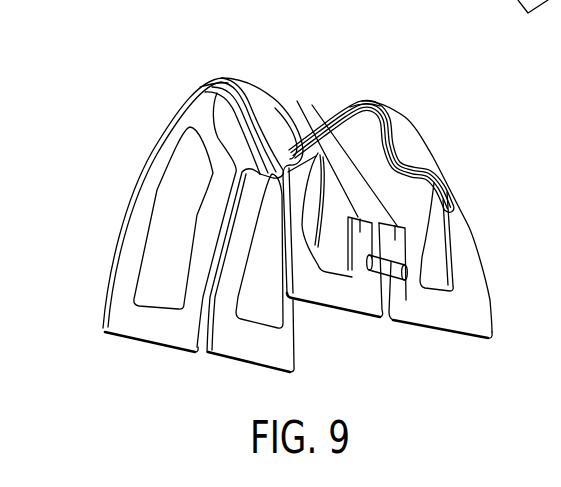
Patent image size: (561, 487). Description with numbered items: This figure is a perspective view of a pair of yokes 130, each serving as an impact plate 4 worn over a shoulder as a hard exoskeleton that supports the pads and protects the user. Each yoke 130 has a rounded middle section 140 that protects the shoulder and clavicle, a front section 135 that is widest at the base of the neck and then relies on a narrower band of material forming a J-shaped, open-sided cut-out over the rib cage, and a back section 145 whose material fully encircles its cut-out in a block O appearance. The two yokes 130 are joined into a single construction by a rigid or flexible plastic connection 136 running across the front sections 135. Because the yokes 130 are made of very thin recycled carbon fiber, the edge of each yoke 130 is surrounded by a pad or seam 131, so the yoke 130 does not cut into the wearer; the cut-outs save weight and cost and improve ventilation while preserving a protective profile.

The impact plate 4 is at (98, 92).
The yoke 130 is at (193, 108).
The pad or seam 131 is at (319, 150).
The front section 135 is at (350, 297).
The plastic connection 136 is at (383, 270).
The middle section 140 is at (250, 93).
The back section 145 is at (130, 238).